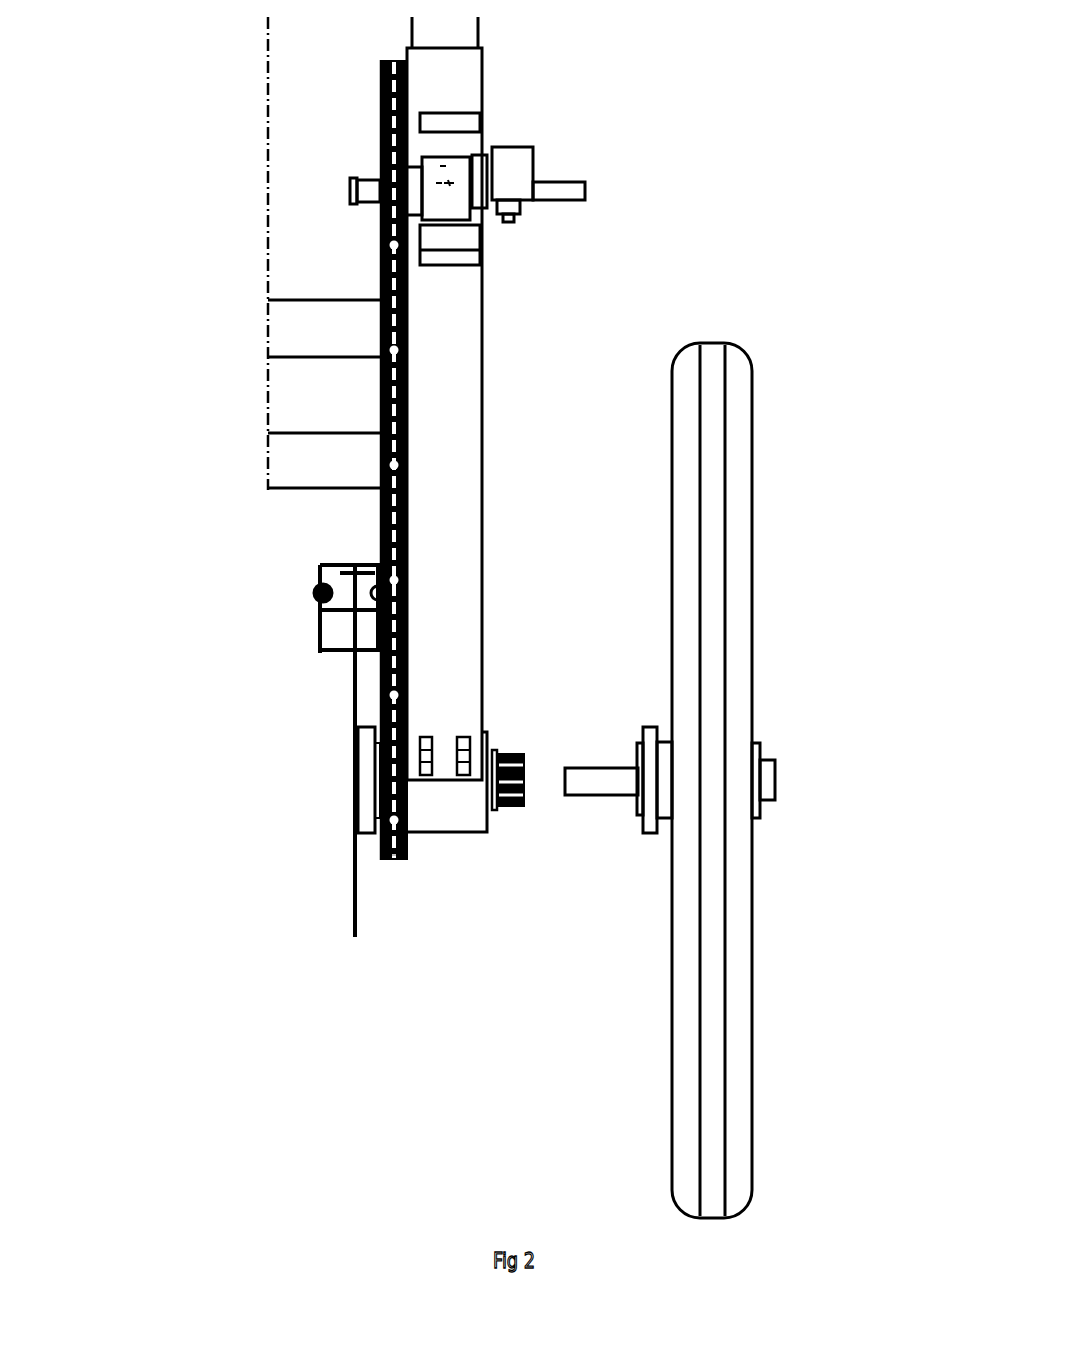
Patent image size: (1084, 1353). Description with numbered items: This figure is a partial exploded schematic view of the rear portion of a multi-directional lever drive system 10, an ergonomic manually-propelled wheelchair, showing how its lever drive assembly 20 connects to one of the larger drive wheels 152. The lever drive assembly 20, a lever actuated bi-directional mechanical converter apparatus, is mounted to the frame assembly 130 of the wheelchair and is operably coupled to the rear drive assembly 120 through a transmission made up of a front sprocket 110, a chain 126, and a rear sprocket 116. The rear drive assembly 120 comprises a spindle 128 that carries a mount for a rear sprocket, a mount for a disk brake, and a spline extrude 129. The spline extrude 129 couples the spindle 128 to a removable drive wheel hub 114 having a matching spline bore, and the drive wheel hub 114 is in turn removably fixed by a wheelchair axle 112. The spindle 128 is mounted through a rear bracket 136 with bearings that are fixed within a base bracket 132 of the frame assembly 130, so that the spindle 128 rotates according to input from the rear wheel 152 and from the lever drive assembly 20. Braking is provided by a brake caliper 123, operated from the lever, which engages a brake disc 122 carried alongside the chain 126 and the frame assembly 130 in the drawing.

The lever drive system 10 is at (223, 1052).
The lever drive assembly 20 is at (615, 195).
The front sprocket 110 is at (355, 125).
The wheelchair axle 112 is at (597, 786).
The drive wheel hub 114 is at (650, 812).
The rear sprocket 116 is at (400, 880).
The rear drive assembly 120 is at (292, 785).
The brake disc 122 is at (350, 928).
The brake caliper 123 is at (455, 237).
The chain 126 is at (372, 500).
The spindle 128 is at (510, 825).
The spline extrude 129 is at (513, 752).
The frame assembly 130 is at (507, 392).
The base bracket 132 is at (457, 535).
The rear bracket 136 is at (452, 822).
The drive wheel 152 is at (740, 962).